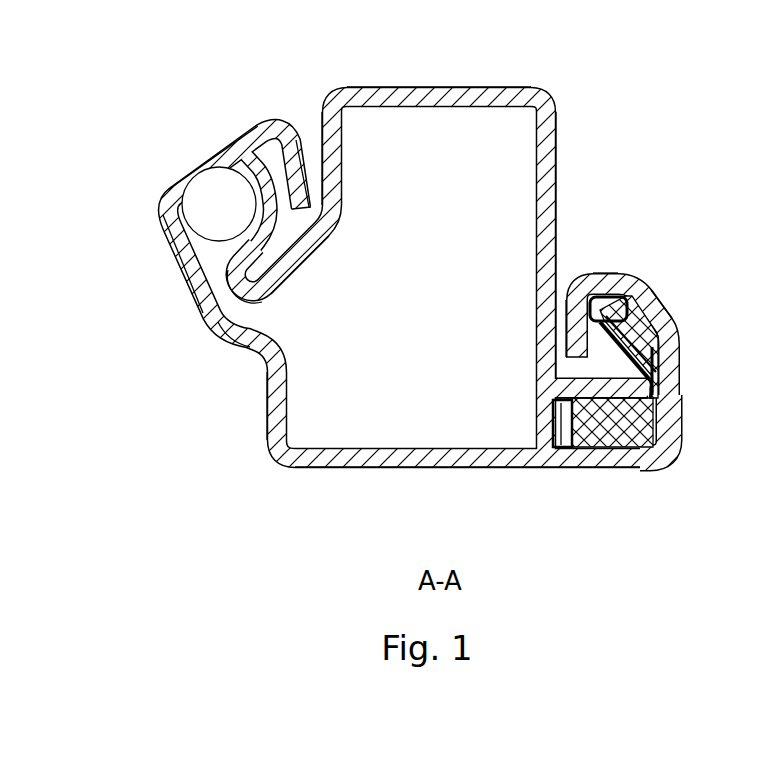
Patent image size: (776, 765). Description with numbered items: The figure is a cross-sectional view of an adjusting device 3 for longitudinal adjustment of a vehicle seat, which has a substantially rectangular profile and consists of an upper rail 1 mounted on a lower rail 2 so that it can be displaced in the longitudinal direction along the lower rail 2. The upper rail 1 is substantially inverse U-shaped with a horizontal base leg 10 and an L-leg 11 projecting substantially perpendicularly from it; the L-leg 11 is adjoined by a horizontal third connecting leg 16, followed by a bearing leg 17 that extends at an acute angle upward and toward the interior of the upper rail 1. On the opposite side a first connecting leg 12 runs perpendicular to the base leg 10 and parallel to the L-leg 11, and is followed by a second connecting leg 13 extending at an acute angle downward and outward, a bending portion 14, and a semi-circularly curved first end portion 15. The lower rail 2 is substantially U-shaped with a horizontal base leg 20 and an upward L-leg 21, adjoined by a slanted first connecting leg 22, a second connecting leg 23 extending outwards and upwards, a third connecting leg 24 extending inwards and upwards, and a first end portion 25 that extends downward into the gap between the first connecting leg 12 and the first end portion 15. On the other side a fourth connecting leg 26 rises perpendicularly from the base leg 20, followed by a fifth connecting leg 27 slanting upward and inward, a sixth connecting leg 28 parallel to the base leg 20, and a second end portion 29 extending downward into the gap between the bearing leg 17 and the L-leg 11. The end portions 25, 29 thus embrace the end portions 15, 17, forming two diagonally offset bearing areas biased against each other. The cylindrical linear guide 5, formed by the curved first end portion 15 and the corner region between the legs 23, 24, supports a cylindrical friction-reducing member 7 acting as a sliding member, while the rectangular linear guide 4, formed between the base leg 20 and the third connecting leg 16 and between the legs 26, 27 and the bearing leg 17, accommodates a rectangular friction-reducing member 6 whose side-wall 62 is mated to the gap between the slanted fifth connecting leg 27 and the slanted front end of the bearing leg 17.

The upper rail 1 is at (503, 86).
The lower rail 2 is at (425, 472).
The adjusting device 3 is at (712, 68).
The linear guide 4 is at (662, 395).
The linear guide 5 is at (232, 165).
The friction-reducing member 6 is at (575, 468).
The friction-reducing member 7 is at (197, 202).
The base leg 10 is at (395, 95).
The L-leg 11 is at (547, 165).
The first connecting leg 12 is at (337, 188).
The second connecting leg 13 is at (307, 263).
The bending portion 14 is at (247, 287).
The first end portion 15 is at (262, 170).
The third connecting leg 16 is at (563, 384).
The bearing leg 17 is at (655, 365).
The base leg 20 is at (325, 463).
The L-leg 21 is at (277, 405).
The first connecting leg 22 is at (233, 343).
The second connecting leg 23 is at (187, 265).
The third connecting leg 24 is at (203, 157).
The first end portion 25 is at (305, 125).
The fourth connecting leg 26 is at (668, 420).
The fifth connecting leg 27 is at (657, 300).
The sixth connecting leg 28 is at (627, 273).
The second end portion 29 is at (580, 297).
The side-wall 62 is at (645, 333).